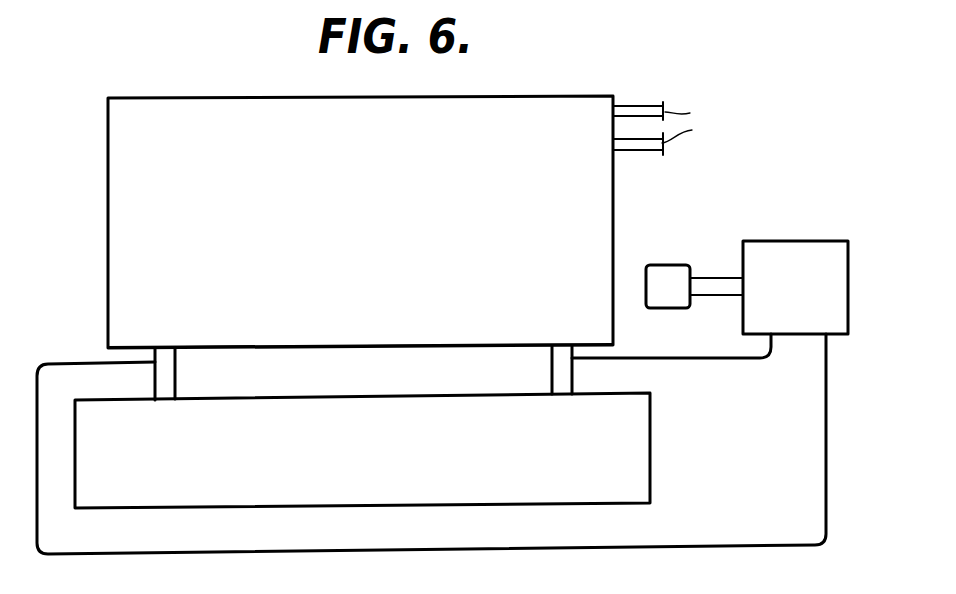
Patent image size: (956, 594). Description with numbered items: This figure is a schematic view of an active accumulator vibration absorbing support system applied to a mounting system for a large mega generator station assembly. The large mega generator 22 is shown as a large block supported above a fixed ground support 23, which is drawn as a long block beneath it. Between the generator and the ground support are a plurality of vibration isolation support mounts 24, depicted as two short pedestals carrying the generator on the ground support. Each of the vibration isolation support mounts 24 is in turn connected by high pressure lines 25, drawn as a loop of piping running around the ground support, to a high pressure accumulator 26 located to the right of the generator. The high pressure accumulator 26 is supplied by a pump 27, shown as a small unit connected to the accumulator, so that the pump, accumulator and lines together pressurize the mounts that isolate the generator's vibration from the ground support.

The large mega generator 22 is at (108, 127).
The fixed ground support 23 is at (377, 470).
The vibration isolation support mounts 24 is at (175, 369).
The high pressure lines 25 is at (825, 400).
The high pressure accumulator 26 is at (808, 248).
The pump 27 is at (653, 277).